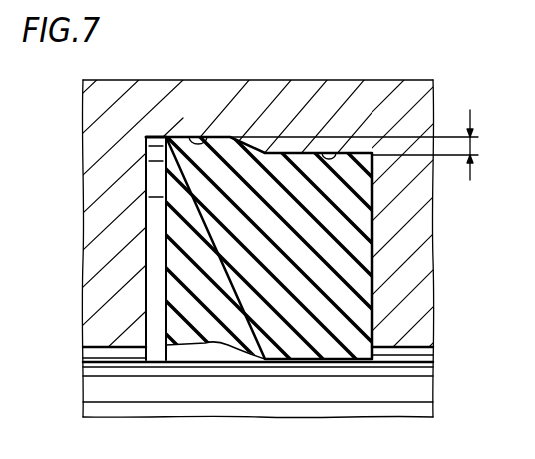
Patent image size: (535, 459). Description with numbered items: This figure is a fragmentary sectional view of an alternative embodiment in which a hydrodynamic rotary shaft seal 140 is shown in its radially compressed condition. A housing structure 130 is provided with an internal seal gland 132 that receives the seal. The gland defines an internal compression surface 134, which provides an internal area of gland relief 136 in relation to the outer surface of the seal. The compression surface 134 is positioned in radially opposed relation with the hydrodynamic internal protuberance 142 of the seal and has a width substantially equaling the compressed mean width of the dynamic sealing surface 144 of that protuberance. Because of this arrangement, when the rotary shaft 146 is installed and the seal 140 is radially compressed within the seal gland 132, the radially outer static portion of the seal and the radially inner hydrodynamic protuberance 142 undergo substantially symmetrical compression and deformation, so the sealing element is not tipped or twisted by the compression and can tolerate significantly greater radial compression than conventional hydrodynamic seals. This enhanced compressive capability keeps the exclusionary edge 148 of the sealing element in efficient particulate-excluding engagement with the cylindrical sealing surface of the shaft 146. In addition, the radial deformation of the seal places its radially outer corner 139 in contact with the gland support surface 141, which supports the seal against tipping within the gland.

The housing structure 130 is at (255, 96).
The internal seal gland 132 is at (157, 353).
The internal compression surface 134 is at (329, 150).
The internal area of gland relief 136 is at (470, 145).
The radially outer corner 139 is at (163, 134).
The hydrodynamic rotary shaft seal 140 is at (210, 325).
The gland support surface 141 is at (201, 138).
The hydrodynamic internal protuberance 142 is at (294, 350).
The dynamic sealing surface 144 is at (333, 365).
The rotary shaft 146 is at (418, 358).
The exclusionary edge 148 is at (372, 364).